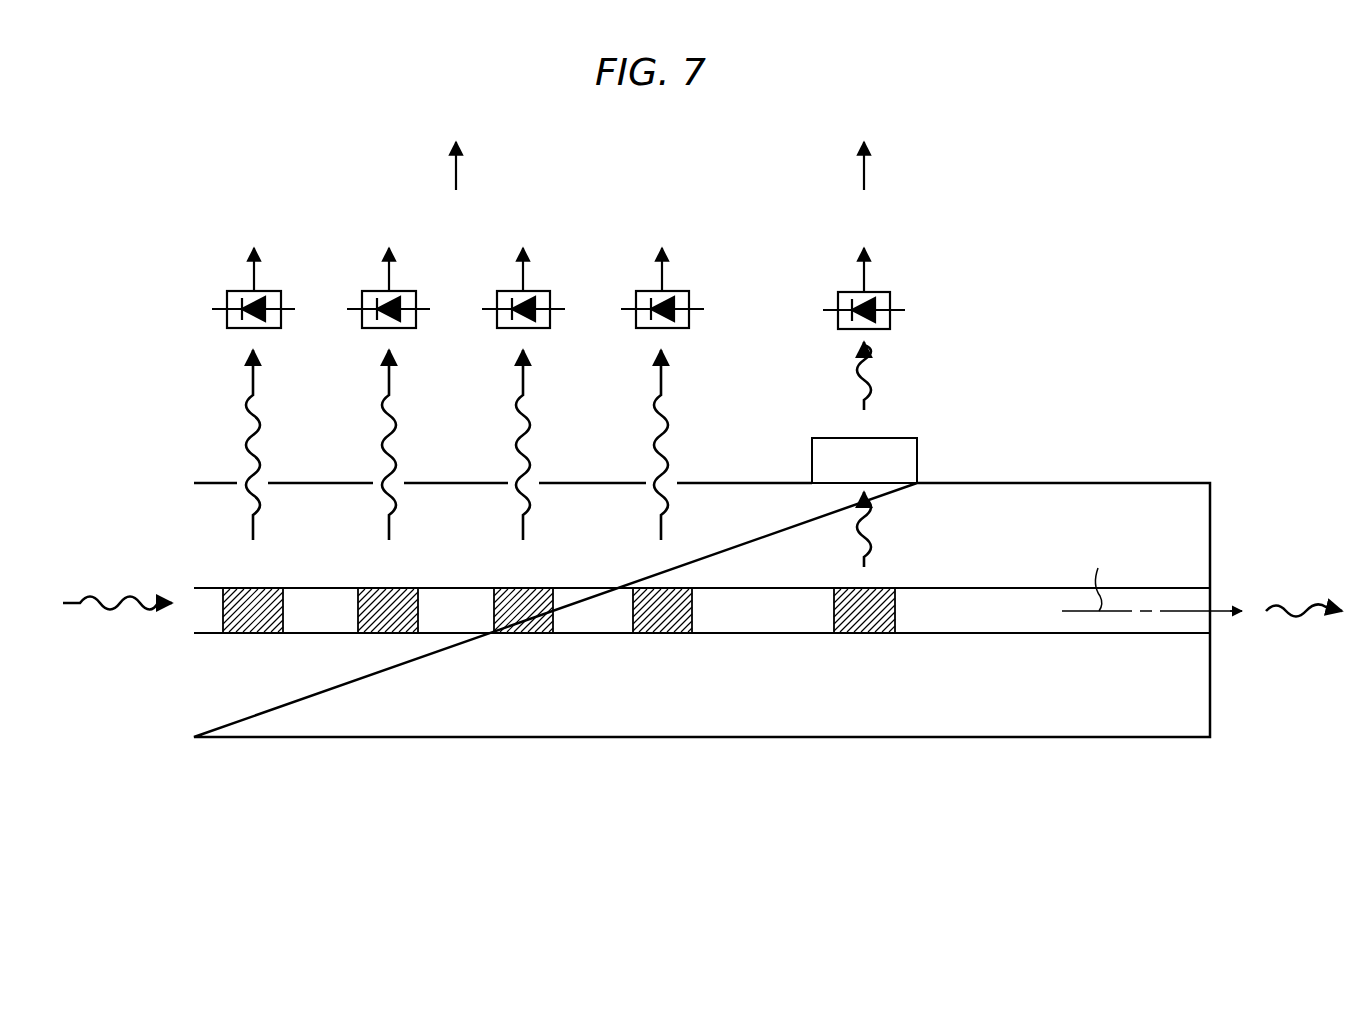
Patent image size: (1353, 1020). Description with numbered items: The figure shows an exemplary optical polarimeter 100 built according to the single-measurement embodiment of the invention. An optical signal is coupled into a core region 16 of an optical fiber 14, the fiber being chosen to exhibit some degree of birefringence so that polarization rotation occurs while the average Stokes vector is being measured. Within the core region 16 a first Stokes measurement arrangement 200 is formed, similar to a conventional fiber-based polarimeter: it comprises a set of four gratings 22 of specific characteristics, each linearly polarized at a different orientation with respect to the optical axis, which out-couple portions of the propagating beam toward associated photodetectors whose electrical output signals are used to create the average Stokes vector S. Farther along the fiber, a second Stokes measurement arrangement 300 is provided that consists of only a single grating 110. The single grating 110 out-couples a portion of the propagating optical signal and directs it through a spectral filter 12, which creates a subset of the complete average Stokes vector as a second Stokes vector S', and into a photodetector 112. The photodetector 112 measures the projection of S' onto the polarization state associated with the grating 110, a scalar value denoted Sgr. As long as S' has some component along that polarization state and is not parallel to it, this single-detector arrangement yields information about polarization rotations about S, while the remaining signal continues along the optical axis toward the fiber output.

The optical polarimeter 100 is at (203, 166).
The optical fiber 14 is at (200, 512).
The core region 16 is at (205, 622).
The gratings 22 is at (258, 618).
The first Stokes measurement arrangement 200 is at (680, 753).
The second Stokes measurement arrangement 300 is at (943, 753).
The single grating 110 is at (873, 618).
The spectral filter 12 is at (918, 461).
The photodetector 112 is at (890, 299).